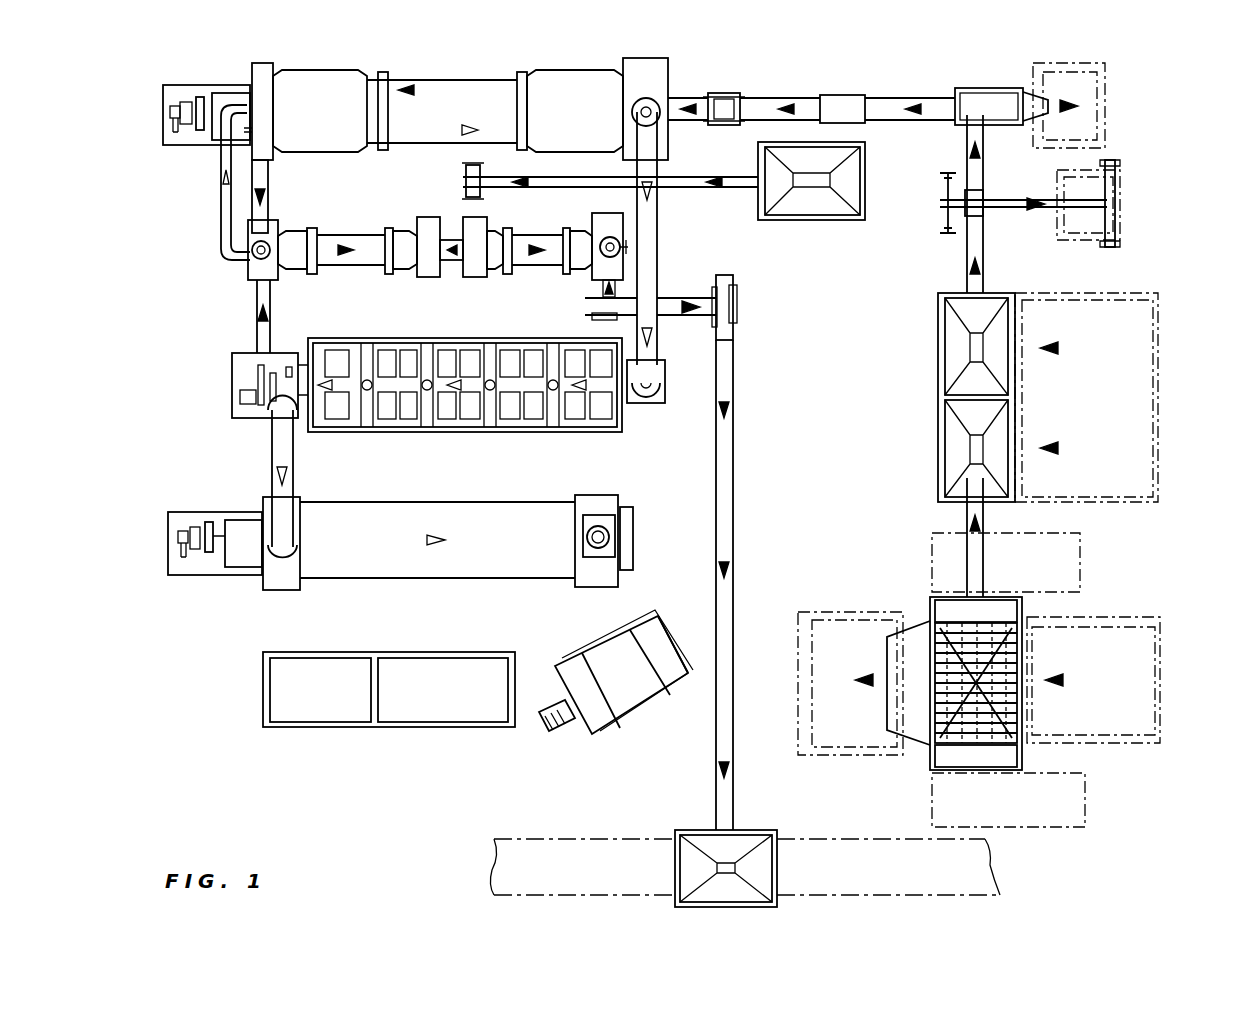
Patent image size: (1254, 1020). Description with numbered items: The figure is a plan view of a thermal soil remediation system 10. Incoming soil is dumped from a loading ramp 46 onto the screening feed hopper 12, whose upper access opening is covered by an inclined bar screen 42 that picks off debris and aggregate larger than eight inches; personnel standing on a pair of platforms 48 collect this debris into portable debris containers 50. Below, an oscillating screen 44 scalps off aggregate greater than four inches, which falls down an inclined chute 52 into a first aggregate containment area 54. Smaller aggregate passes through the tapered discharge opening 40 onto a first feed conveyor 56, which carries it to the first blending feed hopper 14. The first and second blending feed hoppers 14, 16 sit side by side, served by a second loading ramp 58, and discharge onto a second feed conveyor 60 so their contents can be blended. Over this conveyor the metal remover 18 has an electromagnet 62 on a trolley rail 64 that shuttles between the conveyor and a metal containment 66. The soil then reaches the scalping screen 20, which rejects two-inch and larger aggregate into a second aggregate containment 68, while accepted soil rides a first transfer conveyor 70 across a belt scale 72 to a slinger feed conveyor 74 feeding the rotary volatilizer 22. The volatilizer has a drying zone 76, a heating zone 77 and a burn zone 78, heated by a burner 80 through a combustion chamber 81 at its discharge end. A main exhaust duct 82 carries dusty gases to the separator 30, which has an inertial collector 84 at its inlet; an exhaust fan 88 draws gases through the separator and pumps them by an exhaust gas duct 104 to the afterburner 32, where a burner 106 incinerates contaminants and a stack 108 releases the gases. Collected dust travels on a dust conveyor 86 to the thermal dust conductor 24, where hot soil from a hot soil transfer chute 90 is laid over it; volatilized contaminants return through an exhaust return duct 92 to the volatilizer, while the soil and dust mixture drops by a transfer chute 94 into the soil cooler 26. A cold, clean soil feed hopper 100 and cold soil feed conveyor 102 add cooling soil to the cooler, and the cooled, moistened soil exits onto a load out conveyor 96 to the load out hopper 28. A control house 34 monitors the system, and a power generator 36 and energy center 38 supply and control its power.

The soil remediation system 10 is at (152, 236).
The screening feed hopper 12 is at (1030, 640).
The first blending feed hopper 14 is at (998, 448).
The second blending feed hopper 16 is at (998, 333).
The metal remover 18 is at (980, 202).
The scalping screen 20 is at (1003, 98).
The rotary volatilizer 22 is at (488, 72).
The thermal dust conductor 24 is at (366, 230).
The soil cooler 26 is at (533, 278).
The load out hopper 28 is at (743, 832).
The separator 30 is at (390, 340).
The afterburner 32 is at (410, 503).
The control house 34 is at (587, 642).
The power generator 36 is at (300, 697).
The energy center 38 is at (420, 688).
The tapered discharge opening 40 is at (1020, 693).
The bar screen 42 is at (1000, 650).
The oscillating screen 44 is at (1025, 668).
The loading ramp 46 is at (1130, 700).
The platforms 48 is at (1005, 615).
The portable debris containers 50 is at (1045, 555).
The inclined chute 52 is at (918, 630).
The first aggregate containment area 54 is at (850, 725).
The first feed conveyor 56 is at (968, 525).
The second loading ramp 58 is at (1105, 400).
The second feed conveyor 60 is at (965, 150).
The electromagnet 62 is at (982, 217).
The trolley rail 64 is at (1015, 205).
The metal containment 66 is at (1127, 202).
The second aggregate containment 68 is at (1073, 117).
The first transfer conveyor 70 is at (778, 104).
The belt scale 72 is at (850, 100).
The slinger feed conveyor 74 is at (705, 100).
The drying zone 76 is at (578, 88).
The heating zone 77 is at (462, 96).
The burn zone 78 is at (320, 110).
The burner 80 is at (200, 105).
The combustion chamber 81 is at (222, 100).
The main exhaust duct 82 is at (645, 197).
The inertial collector 84 is at (637, 408).
The dust conveyor 86 is at (262, 293).
The exhaust fan 88 is at (243, 400).
The hot soil transfer chute 90 is at (268, 178).
The exhaust return duct 92 is at (224, 203).
The transfer chute 94 is at (455, 235).
The load out conveyor 96 is at (688, 300).
The cold, clean soil feed hopper 100 is at (805, 205).
The cold soil feed conveyor 102 is at (680, 183).
The exhaust gas duct 104 is at (275, 475).
The burner 106 is at (250, 535).
The stack 108 is at (600, 537).